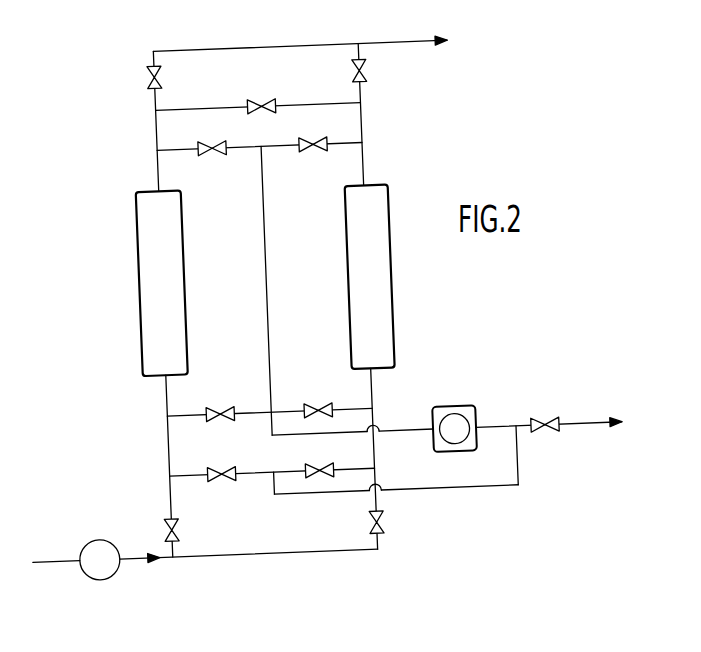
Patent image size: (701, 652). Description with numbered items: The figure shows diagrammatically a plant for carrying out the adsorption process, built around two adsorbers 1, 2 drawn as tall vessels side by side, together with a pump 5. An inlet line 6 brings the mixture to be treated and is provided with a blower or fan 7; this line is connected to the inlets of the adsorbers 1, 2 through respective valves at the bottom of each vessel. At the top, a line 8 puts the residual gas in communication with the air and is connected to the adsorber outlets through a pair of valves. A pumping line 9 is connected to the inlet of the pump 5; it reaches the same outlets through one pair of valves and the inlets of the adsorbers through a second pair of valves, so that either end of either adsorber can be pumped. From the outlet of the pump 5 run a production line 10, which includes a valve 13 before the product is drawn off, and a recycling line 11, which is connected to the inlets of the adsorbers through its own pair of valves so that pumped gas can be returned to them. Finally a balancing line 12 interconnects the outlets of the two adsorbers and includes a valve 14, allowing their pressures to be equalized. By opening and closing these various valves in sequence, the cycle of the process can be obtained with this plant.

The adsorber 1 is at (162, 304).
The adsorber 2 is at (370, 296).
The pump 5 is at (456, 390).
The inlet line 6 is at (61, 552).
The blower or fan 7 is at (118, 518).
The line 8 is at (434, 45).
The pumping line 9 is at (337, 434).
The production line 10 is at (583, 420).
The recycling line 11 is at (444, 493).
The balancing line 12 is at (314, 83).
The valve 13 is at (540, 427).
The valve 14 is at (266, 112).